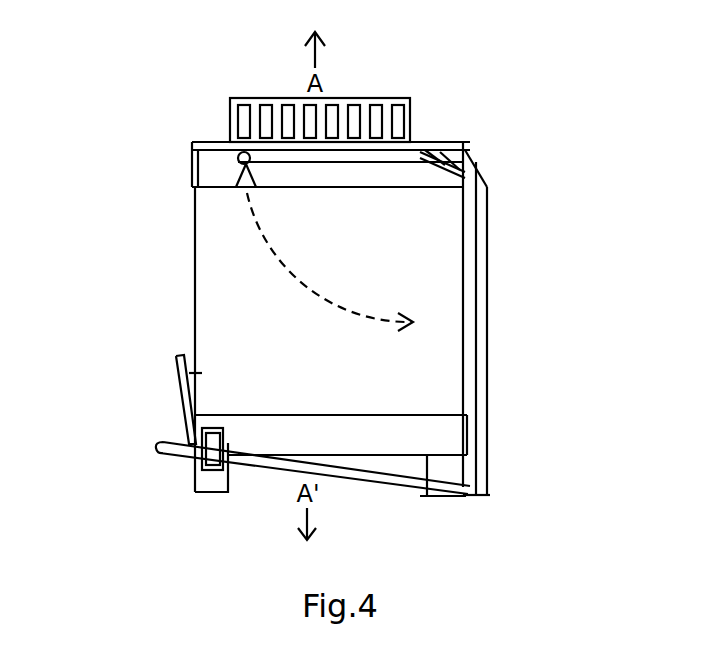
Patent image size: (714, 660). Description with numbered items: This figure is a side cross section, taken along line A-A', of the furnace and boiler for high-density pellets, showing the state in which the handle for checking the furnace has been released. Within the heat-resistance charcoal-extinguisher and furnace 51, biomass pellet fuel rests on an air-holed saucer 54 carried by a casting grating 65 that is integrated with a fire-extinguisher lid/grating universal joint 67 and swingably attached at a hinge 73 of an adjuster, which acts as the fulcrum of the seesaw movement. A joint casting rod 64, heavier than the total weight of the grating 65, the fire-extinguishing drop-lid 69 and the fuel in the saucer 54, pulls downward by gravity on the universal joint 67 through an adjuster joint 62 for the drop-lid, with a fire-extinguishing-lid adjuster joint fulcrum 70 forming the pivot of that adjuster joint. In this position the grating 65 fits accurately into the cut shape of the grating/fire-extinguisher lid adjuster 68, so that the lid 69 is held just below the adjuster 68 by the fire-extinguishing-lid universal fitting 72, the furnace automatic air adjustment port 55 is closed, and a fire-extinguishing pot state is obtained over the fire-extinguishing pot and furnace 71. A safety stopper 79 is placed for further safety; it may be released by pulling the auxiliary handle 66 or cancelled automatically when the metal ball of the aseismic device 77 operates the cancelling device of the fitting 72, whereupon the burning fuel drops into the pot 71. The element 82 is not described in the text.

The heat-resistance charcoal-extinguisher and furnace 51 is at (194, 288).
The air-holed saucer 54 is at (342, 105).
The furnace automatic air adjustment port 55 is at (197, 392).
The adjuster joint for fire-extinguisher drop-lid 62 is at (487, 187).
The joint casting rod 64 is at (482, 270).
The casting grating 65 is at (240, 153).
The auxiliary handle 66 is at (175, 378).
The fire-extinguisher lid/grating universal joint 67 is at (470, 168).
The grating/fire-extinguisher lid adjuster 68 is at (246, 163).
The fire-extinguishing drop-lid 69 is at (326, 153).
The fire-extinguishing-lid adjuster joint fulcrum 70 is at (337, 462).
The fire-extinguishing pot and furnace 71 is at (270, 272).
The fire-extinguishing-lid universal fitting 72 is at (253, 163).
The hinge 73 is at (520, 122).
The aseismic device metal ball 77 is at (383, 150).
The safety stopper 79 is at (208, 442).
The support bracket 82 is at (450, 444).